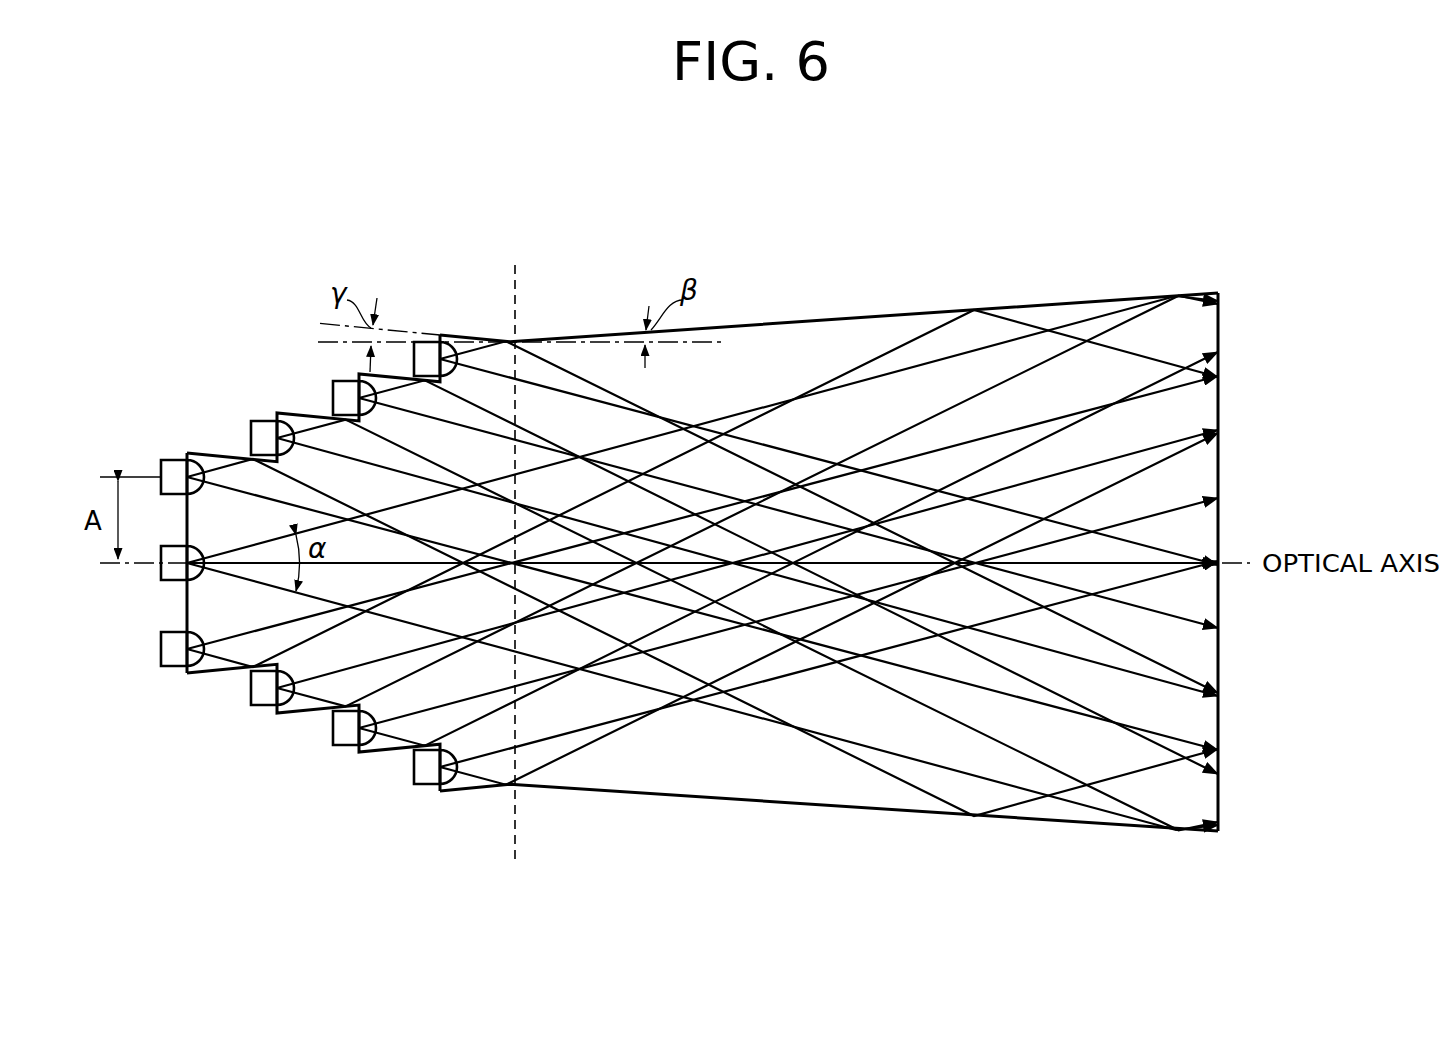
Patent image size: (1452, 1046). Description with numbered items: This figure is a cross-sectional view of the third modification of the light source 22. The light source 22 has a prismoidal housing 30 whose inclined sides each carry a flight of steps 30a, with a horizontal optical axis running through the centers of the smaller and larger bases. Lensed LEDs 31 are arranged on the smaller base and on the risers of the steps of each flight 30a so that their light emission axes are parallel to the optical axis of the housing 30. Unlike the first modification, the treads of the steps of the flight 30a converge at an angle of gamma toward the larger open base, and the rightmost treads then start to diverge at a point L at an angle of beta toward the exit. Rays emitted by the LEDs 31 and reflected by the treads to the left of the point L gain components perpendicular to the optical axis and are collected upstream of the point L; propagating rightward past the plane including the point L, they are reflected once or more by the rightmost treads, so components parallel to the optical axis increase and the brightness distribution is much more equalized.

The light source 22 is at (1062, 236).
The prismoidal housing 30 is at (826, 318).
The flight of steps 30a is at (232, 378).
The lensed LED 31 is at (161, 470).
The point L is at (519, 283).